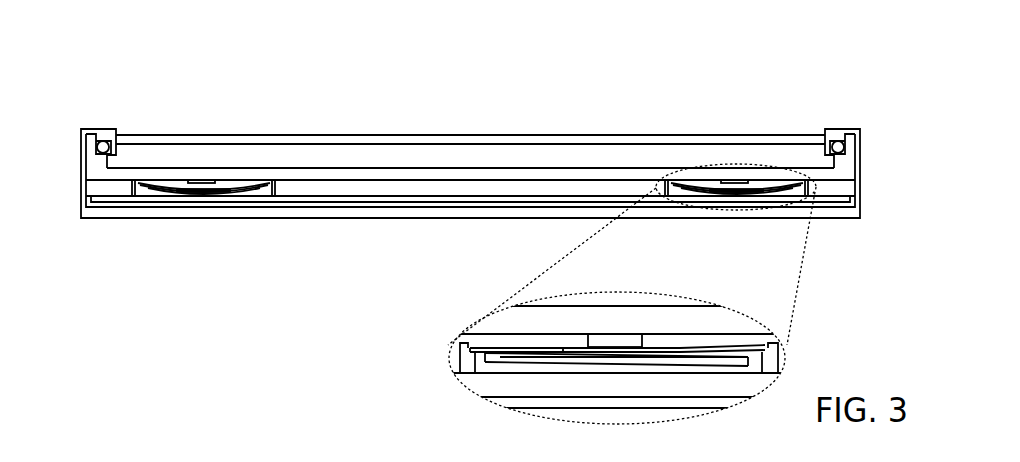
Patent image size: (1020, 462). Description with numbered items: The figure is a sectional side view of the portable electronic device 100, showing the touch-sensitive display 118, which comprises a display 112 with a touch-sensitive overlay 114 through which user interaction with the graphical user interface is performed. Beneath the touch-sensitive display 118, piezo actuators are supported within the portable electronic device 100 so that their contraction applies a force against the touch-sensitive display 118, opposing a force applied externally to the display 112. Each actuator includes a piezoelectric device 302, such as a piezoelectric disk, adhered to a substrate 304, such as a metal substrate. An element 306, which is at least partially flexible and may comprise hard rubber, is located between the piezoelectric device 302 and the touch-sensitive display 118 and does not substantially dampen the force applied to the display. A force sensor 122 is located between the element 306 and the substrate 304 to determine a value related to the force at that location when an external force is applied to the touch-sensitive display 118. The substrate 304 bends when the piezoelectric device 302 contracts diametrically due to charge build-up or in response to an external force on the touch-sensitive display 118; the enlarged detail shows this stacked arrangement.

The portable electronic device 100 is at (685, 96).
The display 112 is at (378, 144).
The touch-sensitive overlay 114 is at (447, 135).
The touch-sensitive display 118 is at (198, 134).
The force sensor 122 is at (675, 348).
The piezoelectric device 302 is at (637, 363).
The substrate 304 is at (480, 346).
The element 306 is at (588, 342).